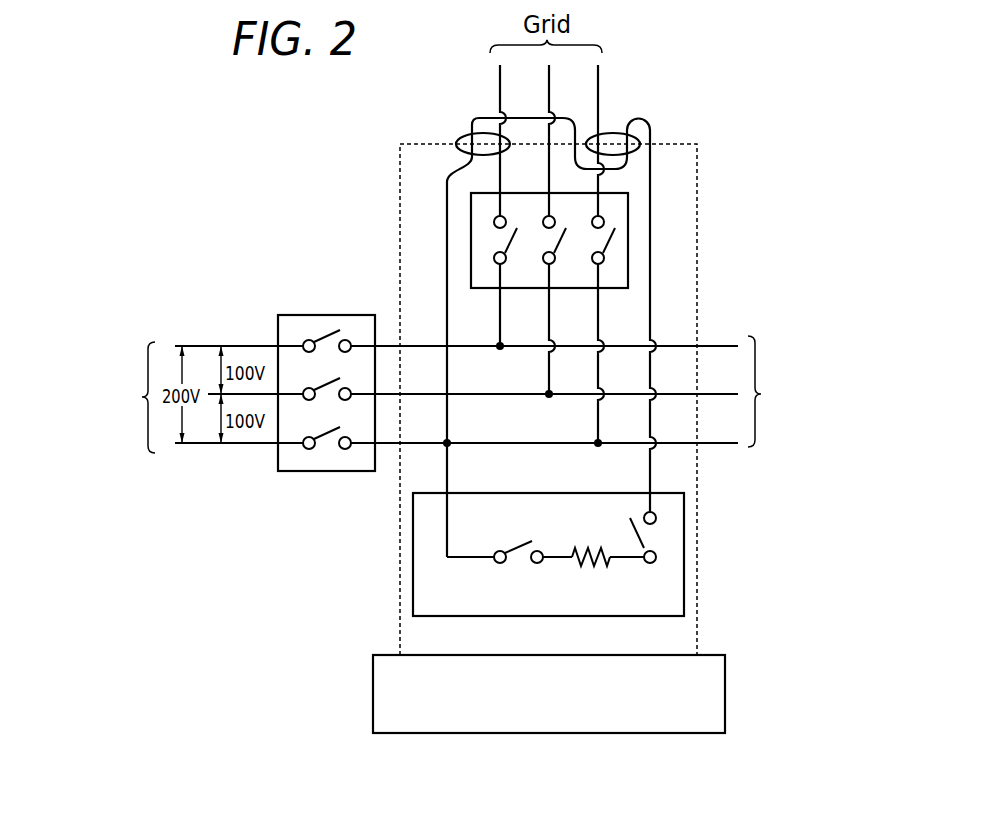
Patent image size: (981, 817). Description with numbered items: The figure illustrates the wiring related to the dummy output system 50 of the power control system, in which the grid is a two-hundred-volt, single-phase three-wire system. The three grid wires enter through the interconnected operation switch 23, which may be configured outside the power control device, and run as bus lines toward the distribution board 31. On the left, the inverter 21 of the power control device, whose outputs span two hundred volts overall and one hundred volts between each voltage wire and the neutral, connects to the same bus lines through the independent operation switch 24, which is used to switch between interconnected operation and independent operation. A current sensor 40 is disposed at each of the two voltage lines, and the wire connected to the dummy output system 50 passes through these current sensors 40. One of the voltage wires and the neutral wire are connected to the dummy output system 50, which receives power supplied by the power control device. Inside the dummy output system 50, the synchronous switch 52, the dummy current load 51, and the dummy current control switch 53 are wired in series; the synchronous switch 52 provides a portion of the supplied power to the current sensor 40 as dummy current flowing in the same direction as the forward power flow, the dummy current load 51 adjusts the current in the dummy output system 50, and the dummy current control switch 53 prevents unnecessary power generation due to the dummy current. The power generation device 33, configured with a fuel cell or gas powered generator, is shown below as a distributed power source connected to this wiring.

The inverter 21 is at (96, 397).
The interconnected operation switch 23 is at (611, 289).
The independent operation switch 24 is at (325, 315).
The distribution board 31 is at (835, 398).
The power generation device 33 is at (549, 734).
The current sensor 40 is at (463, 133).
The dummy output system 50 is at (548, 535).
The dummy current load 51 is at (590, 566).
The synchronous switch 52 is at (516, 563).
The dummy current control switch 53 is at (632, 535).